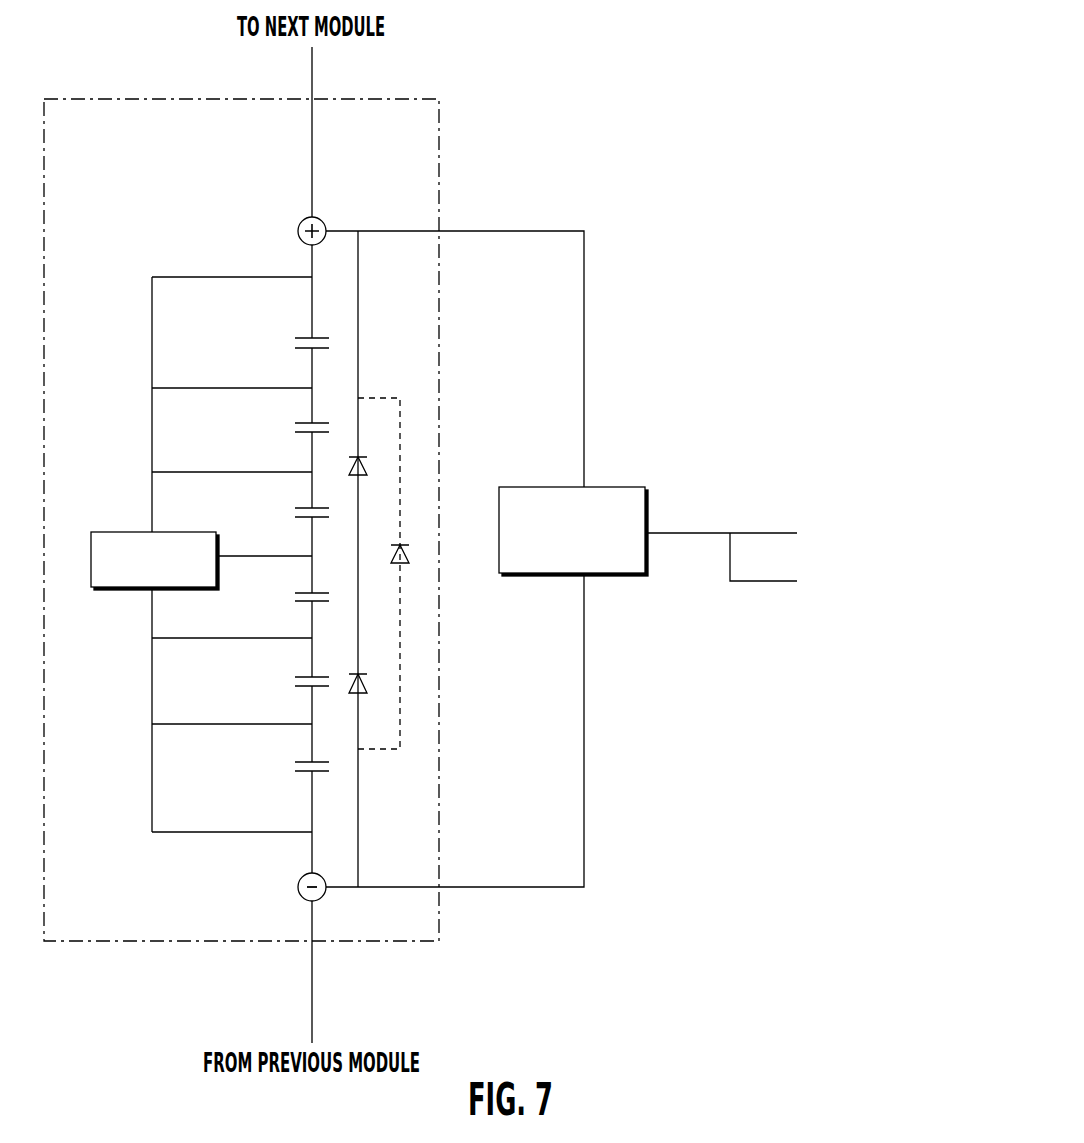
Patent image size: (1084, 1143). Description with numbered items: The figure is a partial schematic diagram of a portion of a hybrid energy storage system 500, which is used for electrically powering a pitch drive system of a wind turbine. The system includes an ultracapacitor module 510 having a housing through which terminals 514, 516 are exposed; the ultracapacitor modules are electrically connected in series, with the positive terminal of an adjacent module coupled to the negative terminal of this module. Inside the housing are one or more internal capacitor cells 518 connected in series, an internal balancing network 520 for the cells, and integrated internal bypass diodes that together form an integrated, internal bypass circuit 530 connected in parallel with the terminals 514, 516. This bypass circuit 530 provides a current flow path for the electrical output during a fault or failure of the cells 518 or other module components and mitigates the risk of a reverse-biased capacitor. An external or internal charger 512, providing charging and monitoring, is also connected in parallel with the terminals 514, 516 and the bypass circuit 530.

The hybrid energy storage system 500 is at (520, 185).
The ultracapacitor module 510 is at (133, 98).
The charger 512 is at (615, 487).
The terminal 514 is at (298, 231).
The terminal 516 is at (298, 887).
The internal capacitor cells 518 is at (152, 785).
The internal balancing network 520 is at (128, 532).
The integrated internal bypass circuit 530 is at (358, 849).